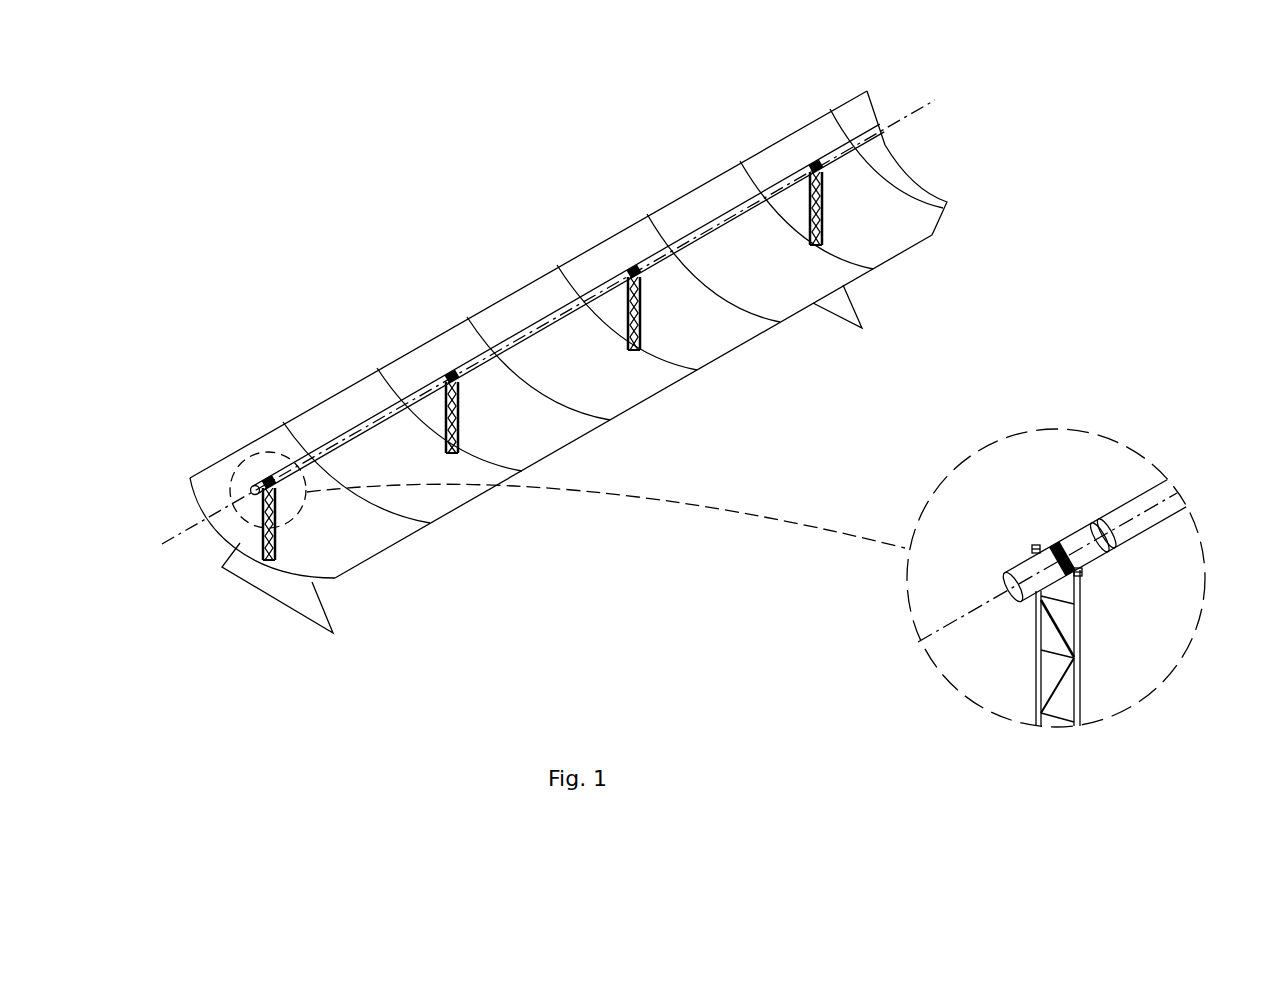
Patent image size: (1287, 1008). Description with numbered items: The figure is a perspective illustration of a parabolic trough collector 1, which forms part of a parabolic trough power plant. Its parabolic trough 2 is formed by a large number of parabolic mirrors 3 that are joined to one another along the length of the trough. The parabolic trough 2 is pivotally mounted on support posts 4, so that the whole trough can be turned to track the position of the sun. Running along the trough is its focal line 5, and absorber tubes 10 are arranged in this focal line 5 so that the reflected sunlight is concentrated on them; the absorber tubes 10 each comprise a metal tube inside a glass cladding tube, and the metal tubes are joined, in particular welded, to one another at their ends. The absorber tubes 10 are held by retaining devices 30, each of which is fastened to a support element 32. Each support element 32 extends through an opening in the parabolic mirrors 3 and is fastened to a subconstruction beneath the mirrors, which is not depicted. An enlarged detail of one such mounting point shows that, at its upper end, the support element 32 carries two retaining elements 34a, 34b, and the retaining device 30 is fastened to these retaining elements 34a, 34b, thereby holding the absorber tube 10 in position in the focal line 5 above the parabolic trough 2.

The parabolic trough collector 1 is at (460, 188).
The parabolic trough 2 is at (932, 182).
The parabolic mirrors 3 is at (622, 400).
The support posts 4 is at (308, 597).
The focal line 5 is at (175, 535).
The absorber tubes 10 is at (500, 303).
The retaining device 30 is at (263, 477).
The support element 32 is at (277, 525).
The retaining element 34a is at (1040, 547).
The retaining element 34b is at (1080, 573).